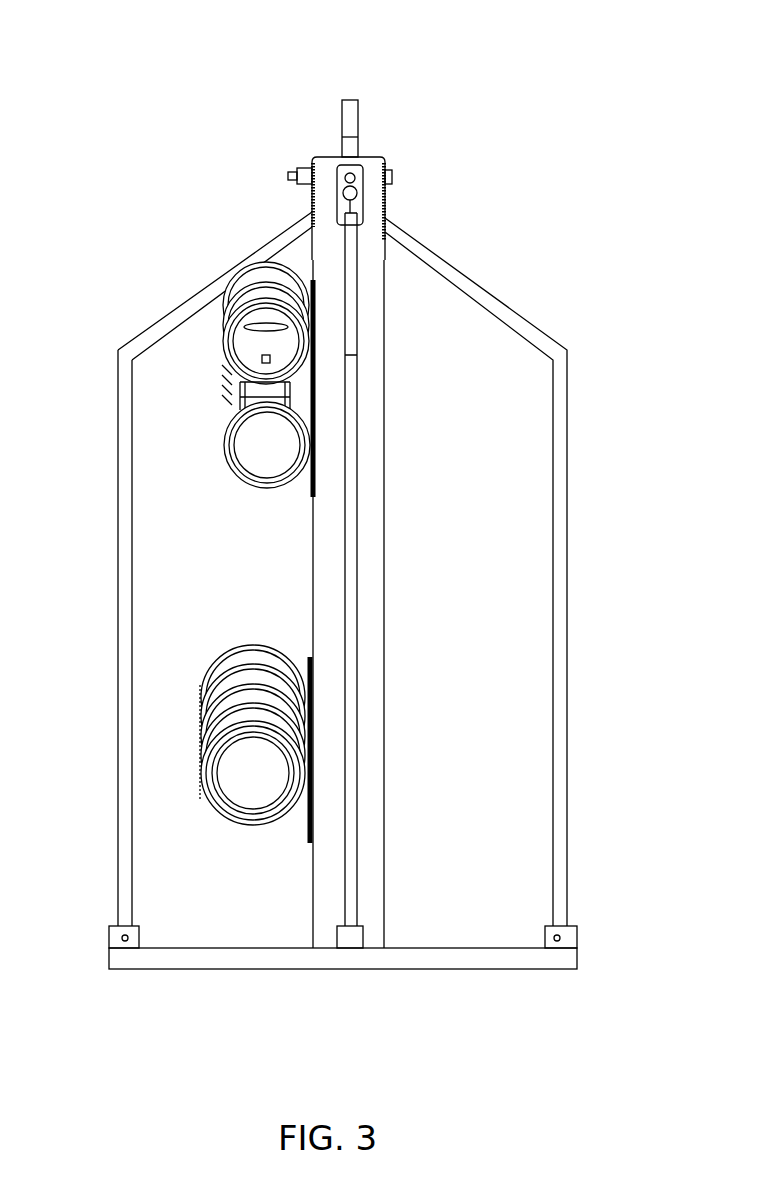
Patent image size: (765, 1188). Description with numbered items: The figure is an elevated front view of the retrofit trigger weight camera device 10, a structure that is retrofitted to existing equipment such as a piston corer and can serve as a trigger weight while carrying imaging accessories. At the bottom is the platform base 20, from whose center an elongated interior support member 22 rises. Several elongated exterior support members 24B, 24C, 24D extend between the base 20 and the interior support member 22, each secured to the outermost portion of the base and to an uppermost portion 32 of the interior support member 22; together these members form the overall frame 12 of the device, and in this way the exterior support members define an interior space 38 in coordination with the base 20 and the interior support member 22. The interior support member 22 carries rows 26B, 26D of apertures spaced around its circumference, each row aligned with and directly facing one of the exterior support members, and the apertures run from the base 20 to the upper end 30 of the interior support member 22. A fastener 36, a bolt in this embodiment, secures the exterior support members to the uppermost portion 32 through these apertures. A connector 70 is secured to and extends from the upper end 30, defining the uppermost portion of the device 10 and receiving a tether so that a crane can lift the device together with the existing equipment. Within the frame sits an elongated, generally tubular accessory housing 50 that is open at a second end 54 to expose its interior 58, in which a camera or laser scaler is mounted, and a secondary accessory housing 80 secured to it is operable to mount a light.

The retrofit trigger weight camera device 10 is at (102, 176).
The frame 12 is at (580, 444).
The platform base 20 is at (417, 978).
The interior support member 22 is at (385, 575).
The exterior support member 24B is at (568, 583).
The exterior support member 24C is at (355, 441).
The exterior support member 24D is at (120, 540).
The row of apertures 26B is at (378, 515).
The row of apertures 26D is at (318, 536).
The upper end 30 is at (376, 158).
The uppermost portion 32 is at (390, 205).
The fastener 36 is at (290, 176).
The interior space 38 is at (528, 665).
The accessory housing 50 is at (205, 418).
The second end 54 is at (226, 400).
The interior 58 is at (253, 462).
The connector 70 is at (362, 88).
The secondary accessory housing 80 is at (246, 282).